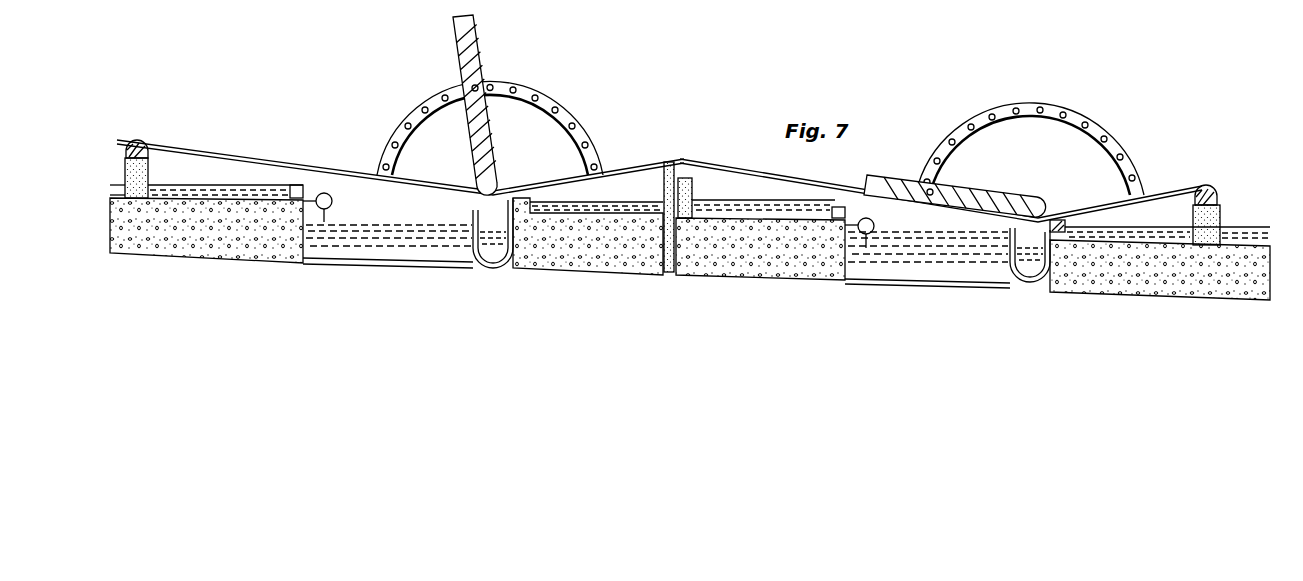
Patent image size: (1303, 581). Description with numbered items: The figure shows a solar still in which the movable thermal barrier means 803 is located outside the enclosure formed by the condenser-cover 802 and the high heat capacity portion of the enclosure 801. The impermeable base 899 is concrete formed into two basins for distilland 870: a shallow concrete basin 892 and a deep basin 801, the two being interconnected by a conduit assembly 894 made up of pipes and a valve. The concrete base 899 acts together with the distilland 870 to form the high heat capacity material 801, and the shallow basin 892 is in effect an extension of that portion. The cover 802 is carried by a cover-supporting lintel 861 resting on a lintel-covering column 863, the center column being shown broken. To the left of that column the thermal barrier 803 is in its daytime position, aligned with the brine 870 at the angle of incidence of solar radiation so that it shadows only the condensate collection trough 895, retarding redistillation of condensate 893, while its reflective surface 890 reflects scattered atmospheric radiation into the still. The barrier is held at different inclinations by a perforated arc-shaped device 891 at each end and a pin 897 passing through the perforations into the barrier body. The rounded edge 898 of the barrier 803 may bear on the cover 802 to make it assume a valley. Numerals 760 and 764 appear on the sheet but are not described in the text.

The roof structure 760 is at (803, 0).
The roof panel 764 is at (944, 3).
The high heat capacity portion of the enclosure 801 is at (384, 230).
The condenser-cover 802 is at (157, 141).
The movable thermal barrier means 803 is at (474, 16).
The cover-supporting lintel 861 is at (143, 143).
The lintel-covering column 863 is at (150, 160).
The distilland 870 is at (268, 190).
The reflective surface 890 is at (457, 62).
The perforated arc-shaped device 891 is at (580, 120).
The shallow concrete basin 892 is at (212, 190).
The condensate 893 is at (487, 240).
The conduit assembly 894 is at (325, 193).
The condensate collection trough 895 is at (477, 210).
The pin 897 is at (478, 86).
The rounded edge 898 is at (498, 191).
The impermeable base 899 is at (395, 260).